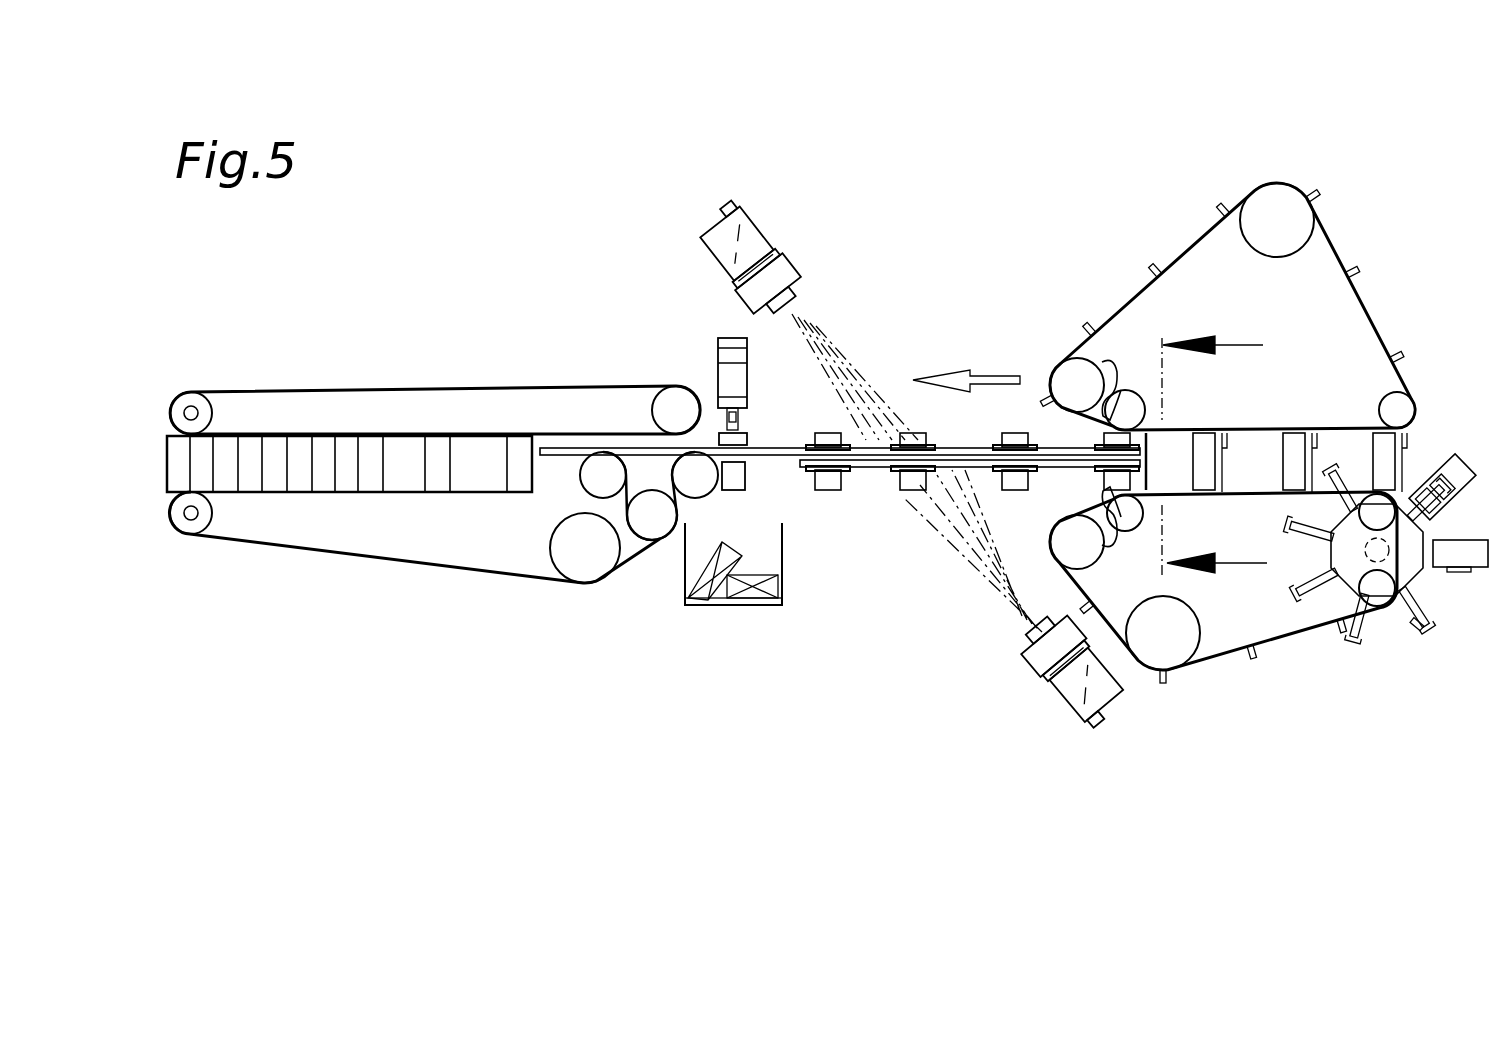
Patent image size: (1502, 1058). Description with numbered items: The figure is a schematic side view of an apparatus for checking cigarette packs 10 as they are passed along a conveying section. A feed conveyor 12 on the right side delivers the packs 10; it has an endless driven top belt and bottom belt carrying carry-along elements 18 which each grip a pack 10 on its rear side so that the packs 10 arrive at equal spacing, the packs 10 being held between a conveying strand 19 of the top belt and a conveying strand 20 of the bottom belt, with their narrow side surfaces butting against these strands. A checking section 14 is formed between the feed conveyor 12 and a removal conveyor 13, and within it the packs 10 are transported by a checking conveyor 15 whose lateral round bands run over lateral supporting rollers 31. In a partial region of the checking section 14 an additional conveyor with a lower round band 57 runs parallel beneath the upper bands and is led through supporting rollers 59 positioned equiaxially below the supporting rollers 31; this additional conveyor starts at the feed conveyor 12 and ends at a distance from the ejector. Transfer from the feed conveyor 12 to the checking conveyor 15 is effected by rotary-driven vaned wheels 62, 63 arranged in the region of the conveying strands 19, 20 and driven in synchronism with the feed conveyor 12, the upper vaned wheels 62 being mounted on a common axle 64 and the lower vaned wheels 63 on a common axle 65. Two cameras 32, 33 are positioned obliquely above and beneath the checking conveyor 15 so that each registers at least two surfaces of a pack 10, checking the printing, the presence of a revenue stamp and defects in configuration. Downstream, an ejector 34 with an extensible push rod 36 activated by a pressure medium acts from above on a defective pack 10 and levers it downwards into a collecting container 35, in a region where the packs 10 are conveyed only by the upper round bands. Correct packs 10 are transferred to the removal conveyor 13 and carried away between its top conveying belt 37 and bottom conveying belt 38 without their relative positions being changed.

The pack 10 is at (518, 475).
The feed conveyor 12 is at (1145, 200).
The removal conveyor 13 is at (405, 330).
The checking section 14 is at (905, 700).
The checking conveyor 15 is at (776, 415).
The carry-along element 18 is at (1362, 277).
The conveying strand of the top belt 19 is at (1278, 427).
The conveying strand of the bottom belt 20 is at (1187, 497).
The supporting roller 31 is at (910, 437).
The camera 32 is at (760, 240).
The camera 33 is at (1068, 690).
The ejector 34 is at (727, 338).
The collecting container 35 is at (683, 560).
The push rod 36 is at (738, 428).
The top conveying belt 37 is at (310, 382).
The bottom conveying belt 38 is at (245, 555).
The round band 57 is at (872, 478).
The supporting roller 59 is at (933, 473).
The upper vaned wheel 62 is at (1107, 388).
The lower vaned wheel 63 is at (1127, 540).
The axle 64 is at (1112, 375).
The axle 65 is at (1146, 484).